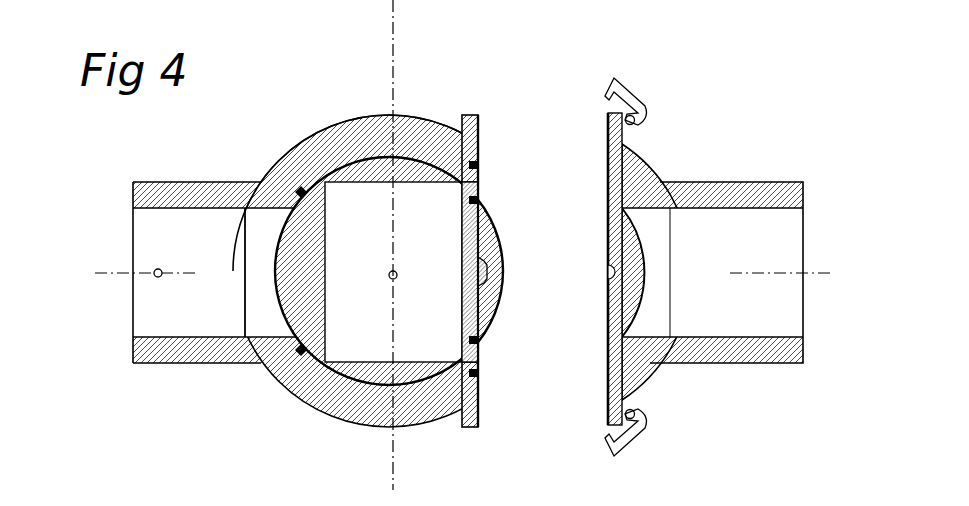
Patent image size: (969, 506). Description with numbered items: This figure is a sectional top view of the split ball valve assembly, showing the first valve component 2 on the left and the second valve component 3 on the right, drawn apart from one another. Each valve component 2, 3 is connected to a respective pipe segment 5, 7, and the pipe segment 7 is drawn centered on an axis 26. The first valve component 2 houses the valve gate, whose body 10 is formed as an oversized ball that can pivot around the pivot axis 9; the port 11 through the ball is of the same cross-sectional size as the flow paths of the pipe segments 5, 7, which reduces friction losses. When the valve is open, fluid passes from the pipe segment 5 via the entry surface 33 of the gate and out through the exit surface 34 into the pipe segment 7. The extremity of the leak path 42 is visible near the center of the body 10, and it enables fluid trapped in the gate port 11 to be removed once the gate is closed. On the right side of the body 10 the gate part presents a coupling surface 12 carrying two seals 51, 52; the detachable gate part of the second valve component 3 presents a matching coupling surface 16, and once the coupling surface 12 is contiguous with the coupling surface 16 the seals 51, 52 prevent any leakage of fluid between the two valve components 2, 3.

The first valve component 2 is at (292, 128).
The second valve component 3 is at (770, 115).
The pipe segment 5 is at (208, 356).
The pipe segment 7 is at (765, 352).
The pivot axis 9 is at (395, 31).
The body 10 is at (313, 223).
The port 11 is at (363, 205).
The coupling surface 12 is at (480, 239).
The coupling surface 16 is at (607, 226).
The pipe axis 26 is at (806, 273).
The entry surface 33 is at (413, 362).
The exit surface 34 is at (405, 178).
The leak path 42 is at (391, 280).
The seal 51 is at (478, 200).
The seal 52 is at (478, 340).